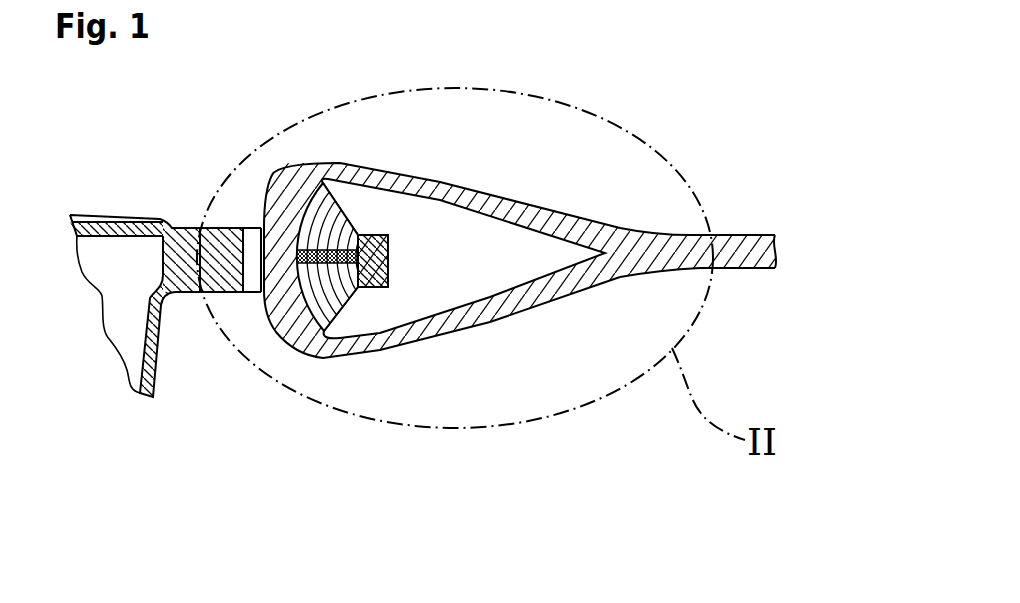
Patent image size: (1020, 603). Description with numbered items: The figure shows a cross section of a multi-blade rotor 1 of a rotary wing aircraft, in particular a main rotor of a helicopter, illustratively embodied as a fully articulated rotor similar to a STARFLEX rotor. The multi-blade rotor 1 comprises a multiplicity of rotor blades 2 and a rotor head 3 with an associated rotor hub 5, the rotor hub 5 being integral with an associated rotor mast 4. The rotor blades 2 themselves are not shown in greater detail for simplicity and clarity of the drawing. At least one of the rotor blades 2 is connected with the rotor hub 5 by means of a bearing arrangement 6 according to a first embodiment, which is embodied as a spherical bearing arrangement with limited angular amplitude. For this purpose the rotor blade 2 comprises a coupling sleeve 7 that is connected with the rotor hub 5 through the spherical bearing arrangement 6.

The multi-blade rotor 1 is at (708, 103).
The rotor blades 2 is at (802, 252).
The rotor head 3 is at (151, 183).
The rotor mast 4 is at (151, 366).
The rotor hub 5 is at (180, 314).
The bearing arrangement 6 is at (362, 200).
The coupling sleeve 7 is at (478, 305).